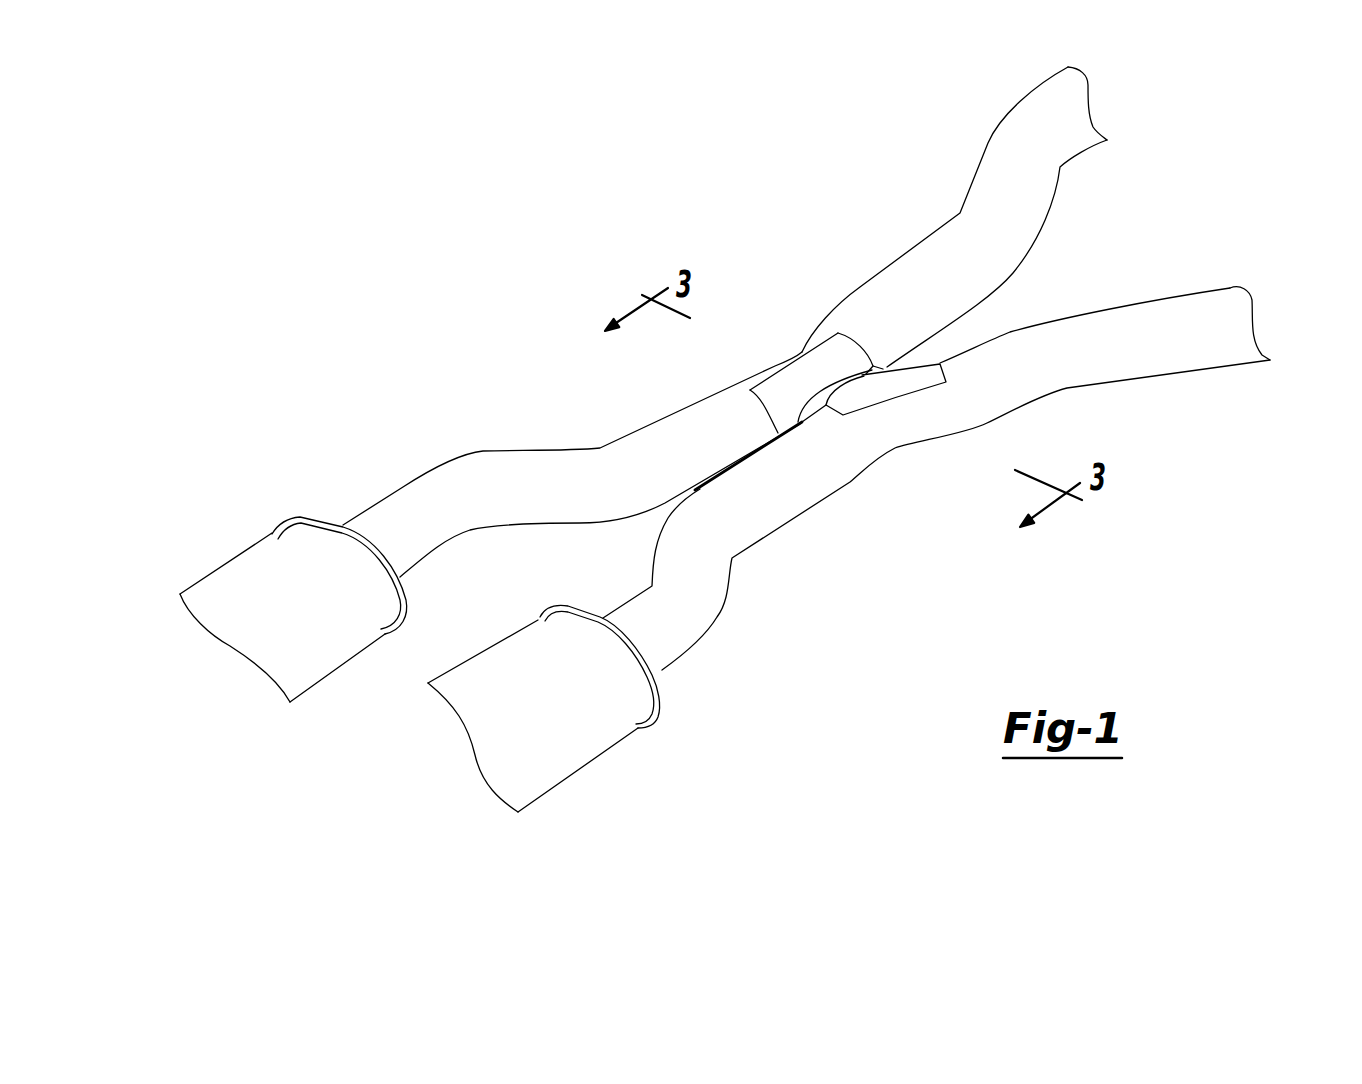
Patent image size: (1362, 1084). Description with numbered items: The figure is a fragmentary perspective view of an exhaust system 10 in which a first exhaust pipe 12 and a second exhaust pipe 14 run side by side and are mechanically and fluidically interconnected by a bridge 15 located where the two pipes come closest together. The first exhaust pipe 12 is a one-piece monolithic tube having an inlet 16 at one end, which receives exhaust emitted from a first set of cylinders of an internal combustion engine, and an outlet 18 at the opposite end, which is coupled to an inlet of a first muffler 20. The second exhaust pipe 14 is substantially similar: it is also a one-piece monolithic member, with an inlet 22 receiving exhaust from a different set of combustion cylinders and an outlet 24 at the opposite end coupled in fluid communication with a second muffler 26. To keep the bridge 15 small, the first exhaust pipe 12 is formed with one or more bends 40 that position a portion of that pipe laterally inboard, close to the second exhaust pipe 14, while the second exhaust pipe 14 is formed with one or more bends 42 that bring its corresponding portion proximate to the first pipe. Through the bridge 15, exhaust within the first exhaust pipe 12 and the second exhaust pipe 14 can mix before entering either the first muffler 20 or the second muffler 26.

The exhaust system 10 is at (750, 464).
The first exhaust pipe 12 is at (1001, 478).
The second exhaust pipe 14 is at (761, 296).
The bridge 15 is at (784, 337).
The inlet 16 is at (1257, 310).
The outlet 18 is at (647, 653).
The first muffler 20 is at (553, 758).
The inlet 22 is at (1090, 88).
The outlet 24 is at (366, 534).
The second muffler 26 is at (247, 580).
The bends 40 is at (1065, 388).
The bends 42 is at (960, 213).